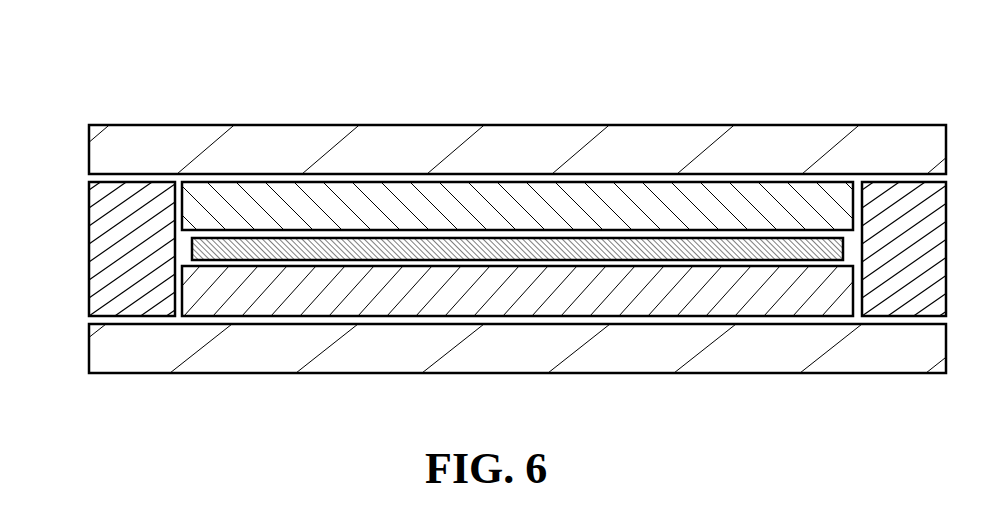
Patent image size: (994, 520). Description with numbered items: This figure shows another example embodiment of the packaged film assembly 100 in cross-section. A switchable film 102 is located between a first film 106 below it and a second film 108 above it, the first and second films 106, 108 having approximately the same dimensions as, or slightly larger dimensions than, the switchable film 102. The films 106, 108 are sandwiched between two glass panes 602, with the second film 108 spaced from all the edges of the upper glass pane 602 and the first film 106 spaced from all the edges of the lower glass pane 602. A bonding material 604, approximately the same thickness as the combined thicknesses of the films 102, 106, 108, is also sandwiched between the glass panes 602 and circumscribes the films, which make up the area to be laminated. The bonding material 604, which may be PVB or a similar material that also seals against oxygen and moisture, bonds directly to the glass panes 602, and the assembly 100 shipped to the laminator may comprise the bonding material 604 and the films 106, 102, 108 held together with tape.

The assembly 100 is at (753, 62).
The switchable film 102 is at (523, 243).
The first film 106 is at (342, 292).
The second film 108 is at (340, 202).
The glass panes 602 is at (169, 124).
The bonding material 604 is at (88, 265).